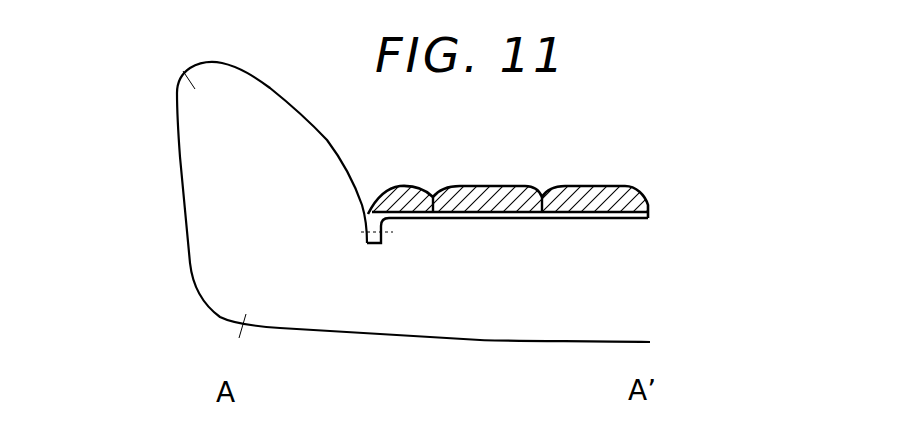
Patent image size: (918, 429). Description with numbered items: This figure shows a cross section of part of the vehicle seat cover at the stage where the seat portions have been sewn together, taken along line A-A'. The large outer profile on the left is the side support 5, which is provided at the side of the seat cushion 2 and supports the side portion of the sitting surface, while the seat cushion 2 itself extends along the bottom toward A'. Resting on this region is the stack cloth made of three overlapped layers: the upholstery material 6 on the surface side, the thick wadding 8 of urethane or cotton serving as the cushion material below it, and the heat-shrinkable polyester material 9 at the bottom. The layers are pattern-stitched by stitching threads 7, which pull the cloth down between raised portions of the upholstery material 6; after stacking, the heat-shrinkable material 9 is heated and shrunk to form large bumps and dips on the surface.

The seat cushion 2 is at (587, 293).
The side support 5 is at (218, 173).
The upholstery material 6 is at (598, 186).
The stitching thread 7 is at (542, 207).
The thick wadding 8 is at (627, 203).
The heat-shrinkable material 9 is at (484, 218).